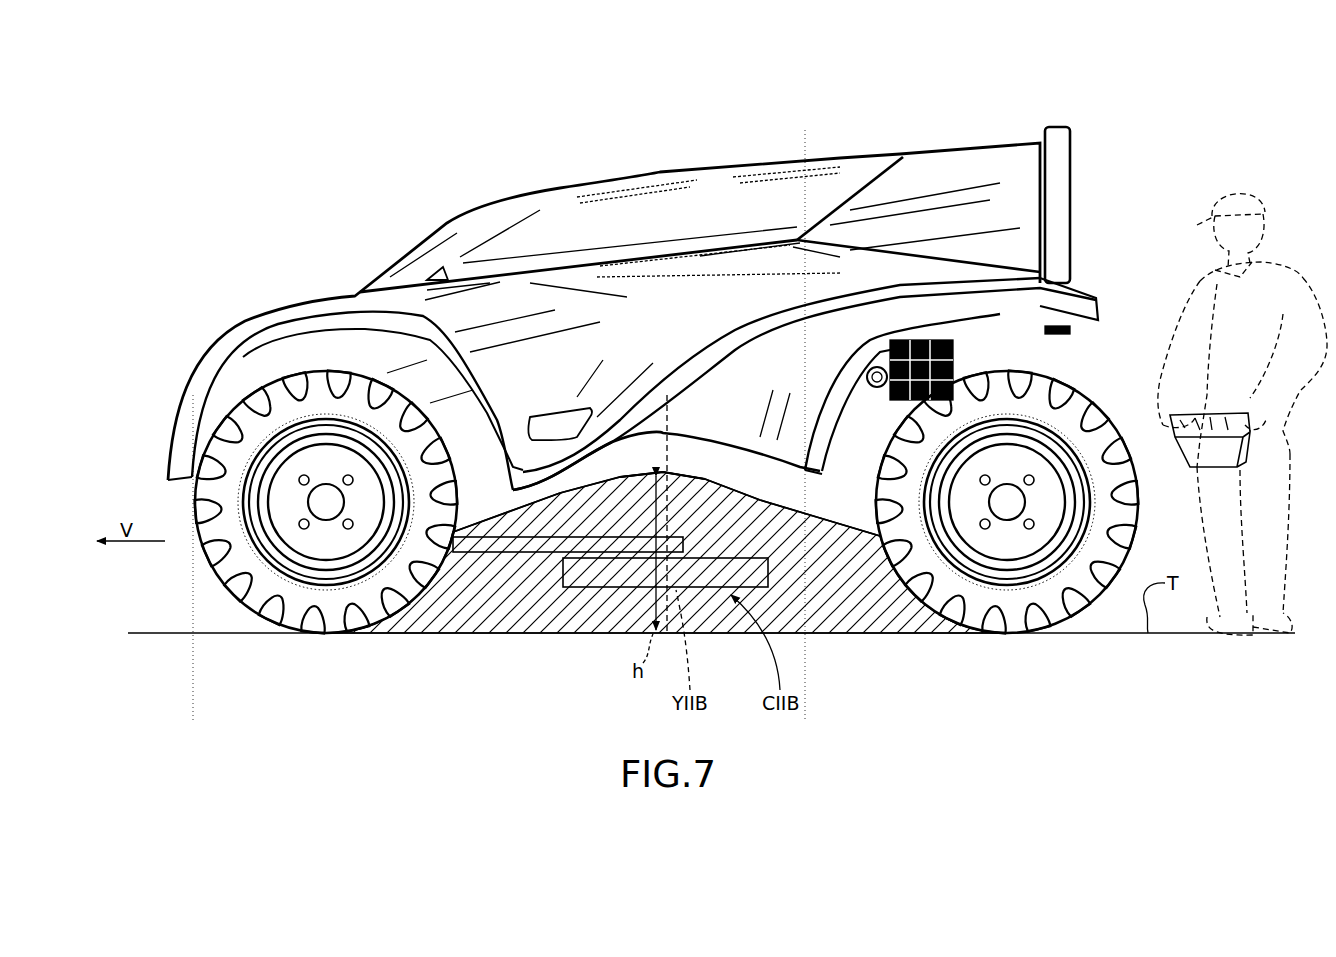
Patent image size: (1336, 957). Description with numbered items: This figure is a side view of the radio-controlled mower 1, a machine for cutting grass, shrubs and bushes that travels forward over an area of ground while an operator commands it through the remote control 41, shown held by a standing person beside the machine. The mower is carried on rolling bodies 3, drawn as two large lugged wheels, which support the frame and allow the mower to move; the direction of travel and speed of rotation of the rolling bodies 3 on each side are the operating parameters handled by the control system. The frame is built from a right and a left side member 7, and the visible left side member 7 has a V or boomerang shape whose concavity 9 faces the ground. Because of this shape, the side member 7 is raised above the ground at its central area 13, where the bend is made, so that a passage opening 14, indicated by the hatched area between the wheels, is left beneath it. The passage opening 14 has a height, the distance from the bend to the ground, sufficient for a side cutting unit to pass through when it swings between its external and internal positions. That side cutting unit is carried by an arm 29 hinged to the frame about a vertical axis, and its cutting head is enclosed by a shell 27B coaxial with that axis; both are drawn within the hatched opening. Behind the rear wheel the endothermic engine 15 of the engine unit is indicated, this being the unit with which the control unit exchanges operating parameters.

The radio-controlled mower 1 is at (605, 378).
The rolling bodies 3 is at (190, 493).
The side member 7 is at (845, 480).
The concavity 9 is at (680, 477).
The central area 13 is at (650, 457).
The passage opening 14 is at (805, 595).
The endothermic engine 15 is at (966, 356).
The shell 27B is at (588, 588).
The arm 29 is at (660, 474).
The remote control 41 is at (1183, 455).